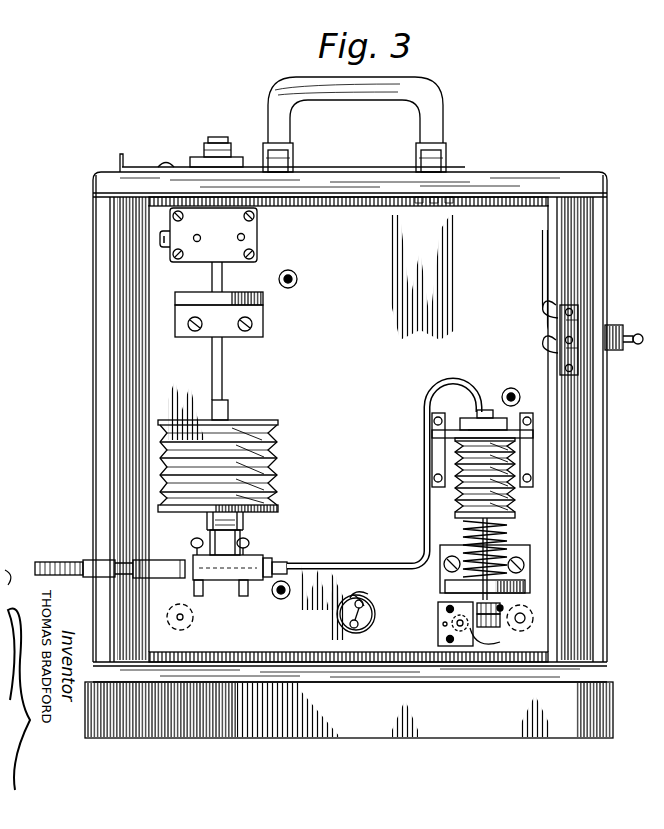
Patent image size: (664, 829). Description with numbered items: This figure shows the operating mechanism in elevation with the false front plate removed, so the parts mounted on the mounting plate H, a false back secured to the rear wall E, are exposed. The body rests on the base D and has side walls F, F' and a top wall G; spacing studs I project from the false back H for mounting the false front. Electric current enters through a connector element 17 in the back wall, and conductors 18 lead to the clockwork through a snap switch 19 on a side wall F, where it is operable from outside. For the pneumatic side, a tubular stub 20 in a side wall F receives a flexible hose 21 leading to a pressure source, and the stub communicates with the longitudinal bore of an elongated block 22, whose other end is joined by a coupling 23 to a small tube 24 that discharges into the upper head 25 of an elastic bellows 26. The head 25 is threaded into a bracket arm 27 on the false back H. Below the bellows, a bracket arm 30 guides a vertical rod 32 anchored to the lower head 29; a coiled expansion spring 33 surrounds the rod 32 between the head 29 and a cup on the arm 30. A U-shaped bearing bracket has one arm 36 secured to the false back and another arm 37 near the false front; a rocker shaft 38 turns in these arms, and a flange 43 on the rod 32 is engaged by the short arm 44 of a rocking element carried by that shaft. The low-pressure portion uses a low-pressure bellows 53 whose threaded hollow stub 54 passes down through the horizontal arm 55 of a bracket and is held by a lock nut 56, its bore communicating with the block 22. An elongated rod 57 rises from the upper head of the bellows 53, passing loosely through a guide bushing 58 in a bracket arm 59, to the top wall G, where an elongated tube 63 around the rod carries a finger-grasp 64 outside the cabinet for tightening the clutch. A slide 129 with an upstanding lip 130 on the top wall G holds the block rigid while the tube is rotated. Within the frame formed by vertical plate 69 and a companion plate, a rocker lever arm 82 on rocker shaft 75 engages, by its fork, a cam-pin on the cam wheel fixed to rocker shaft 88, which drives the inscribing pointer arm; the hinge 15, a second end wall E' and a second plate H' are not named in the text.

The upstanding lip 130 is at (121, 168).
The elongated slide 129 is at (162, 168).
The finger-grasp or head 64 is at (216, 138).
The elongated tube 63 is at (232, 160).
The top wall G is at (506, 174).
The rocker lever arm 82 is at (160, 238).
The rocker shaft 75 is at (205, 238).
The vertical plate 69 is at (254, 218).
The rocker shaft 88 is at (245, 238).
The mounting plate H is at (355, 172).
The side wall F is at (80, 320).
The side wall F' is at (620, 247).
The guide bushing 58 is at (210, 292).
The horizontal bracket arm 59 is at (178, 300).
The elongated rod 57 is at (213, 350).
The pillars or spacing studs I is at (298, 278).
The low-pressure bellows 53 is at (278, 460).
The threaded hollow stub 54 is at (250, 520).
The horizontal arm 55 is at (200, 522).
The lock nut 56 is at (245, 537).
The coupling 23 is at (288, 565).
The small tube or pipe 24 is at (392, 566).
The elongated block 22 is at (238, 592).
The flexible hose 21 is at (44, 560).
The tubular stub 20 is at (85, 560).
The conductors 18 is at (366, 594).
The connector element 17 is at (375, 616).
The bracket arm 27 is at (440, 432).
The upper head or closure member 25 is at (472, 418).
The hinge 15 is at (546, 345).
The snap switch 19 is at (575, 328).
The elastic bellows 26 is at (512, 498).
The lower head or closure 29 is at (512, 515).
The rod 32 is at (495, 548).
The coiled expansion spring 33 is at (506, 555).
The bracket arm 30 is at (505, 586).
The arm 37 is at (458, 647).
The rocker shaft 38 is at (470, 647).
The short arm 44 is at (497, 640).
The flange 43 is at (500, 628).
The arm 36 is at (660, 740).
The rear wall E is at (647, 130).
The end wall E' is at (650, 658).
The side panel H' is at (645, 699).
The base D is at (223, 728).